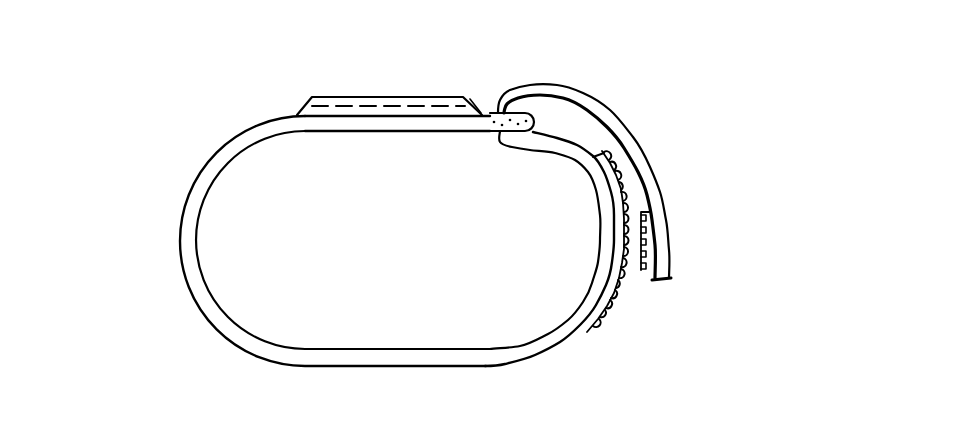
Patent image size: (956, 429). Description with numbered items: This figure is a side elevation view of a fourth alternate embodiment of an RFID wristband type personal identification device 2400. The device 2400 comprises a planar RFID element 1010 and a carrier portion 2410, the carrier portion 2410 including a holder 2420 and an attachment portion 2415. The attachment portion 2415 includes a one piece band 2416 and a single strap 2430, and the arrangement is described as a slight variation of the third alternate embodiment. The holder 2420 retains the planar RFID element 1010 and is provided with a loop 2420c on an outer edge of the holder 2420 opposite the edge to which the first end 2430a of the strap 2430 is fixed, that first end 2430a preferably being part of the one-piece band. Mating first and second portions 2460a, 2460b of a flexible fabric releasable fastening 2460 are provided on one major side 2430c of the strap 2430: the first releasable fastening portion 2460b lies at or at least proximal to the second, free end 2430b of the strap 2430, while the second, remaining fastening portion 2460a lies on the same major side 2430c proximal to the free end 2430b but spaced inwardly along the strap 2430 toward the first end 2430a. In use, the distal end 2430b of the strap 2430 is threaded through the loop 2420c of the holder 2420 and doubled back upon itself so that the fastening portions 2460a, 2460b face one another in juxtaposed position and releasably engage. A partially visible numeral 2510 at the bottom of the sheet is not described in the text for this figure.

The planar RFID element 1010 is at (475, 64).
The RFID wristband type personal identification device 2400 is at (770, 80).
The carrier portion 2410 is at (158, 263).
The attachment portion 2415 is at (375, 340).
The one piece band 2416 is at (231, 321).
The holder 2420 is at (297, 99).
The loop 2420c is at (486, 110).
The strap 2430 is at (172, 218).
The first end of the strap 2430a is at (285, 122).
The second, free end of the strap 2430b is at (670, 243).
The one major side of the strap 2430c is at (541, 364).
The flexible fabric releasable fastening 2460 is at (652, 317).
The second fastening portion 2460a is at (578, 333).
The first releasable fastening portion 2460b is at (652, 282).
The band (partial label) 2510 is at (257, 419).